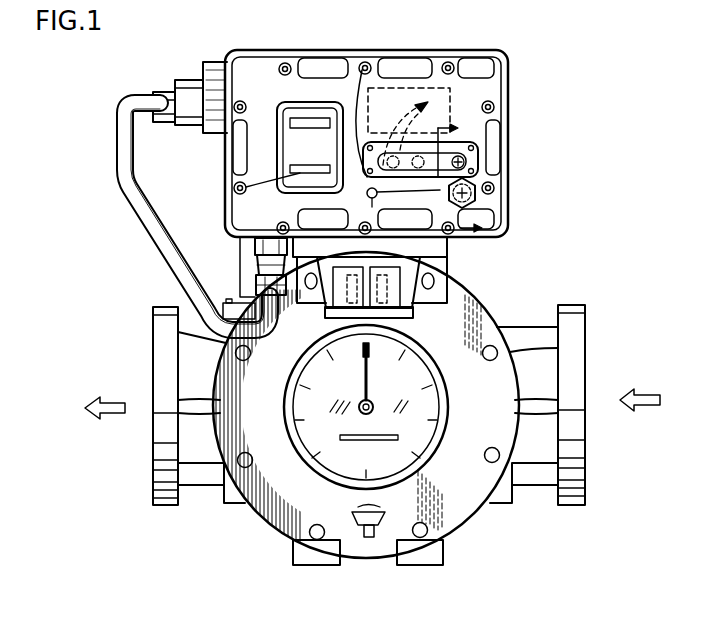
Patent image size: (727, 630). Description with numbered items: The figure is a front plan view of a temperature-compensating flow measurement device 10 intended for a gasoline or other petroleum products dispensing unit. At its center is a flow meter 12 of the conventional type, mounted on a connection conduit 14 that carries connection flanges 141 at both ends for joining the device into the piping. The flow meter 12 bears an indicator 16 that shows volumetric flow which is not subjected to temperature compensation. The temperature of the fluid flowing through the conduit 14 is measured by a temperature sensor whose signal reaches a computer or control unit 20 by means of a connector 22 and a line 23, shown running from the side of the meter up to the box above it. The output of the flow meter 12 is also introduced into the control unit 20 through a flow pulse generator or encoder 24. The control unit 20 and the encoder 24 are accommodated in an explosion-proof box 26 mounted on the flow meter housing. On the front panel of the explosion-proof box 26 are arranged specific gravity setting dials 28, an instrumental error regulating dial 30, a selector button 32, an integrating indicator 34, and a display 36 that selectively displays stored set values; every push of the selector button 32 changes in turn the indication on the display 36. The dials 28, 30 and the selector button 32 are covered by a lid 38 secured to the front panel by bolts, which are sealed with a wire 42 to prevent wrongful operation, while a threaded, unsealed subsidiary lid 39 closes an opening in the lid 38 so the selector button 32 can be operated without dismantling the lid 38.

The temperature-compensating flow measurement device 10 is at (136, 262).
The flow meter 12 is at (290, 494).
The connection conduit 14 is at (204, 462).
The indicator 16 is at (413, 443).
The control unit 20 is at (400, 88).
The connector 22 is at (186, 96).
The line 23 is at (124, 145).
The encoder 24 is at (413, 303).
The explosion-proof box 26 is at (450, 88).
The specific gravity setting dials 28 is at (462, 88).
The instrumental error regulating dial 30 is at (497, 152).
The selector button 32 is at (494, 193).
The integrating indicator 34 is at (308, 120).
The display 36 is at (235, 188).
The lid 38 is at (463, 143).
The subsidiary lid 39 is at (466, 160).
The wire 42 is at (362, 70).
The connection flanges 141 is at (163, 467).